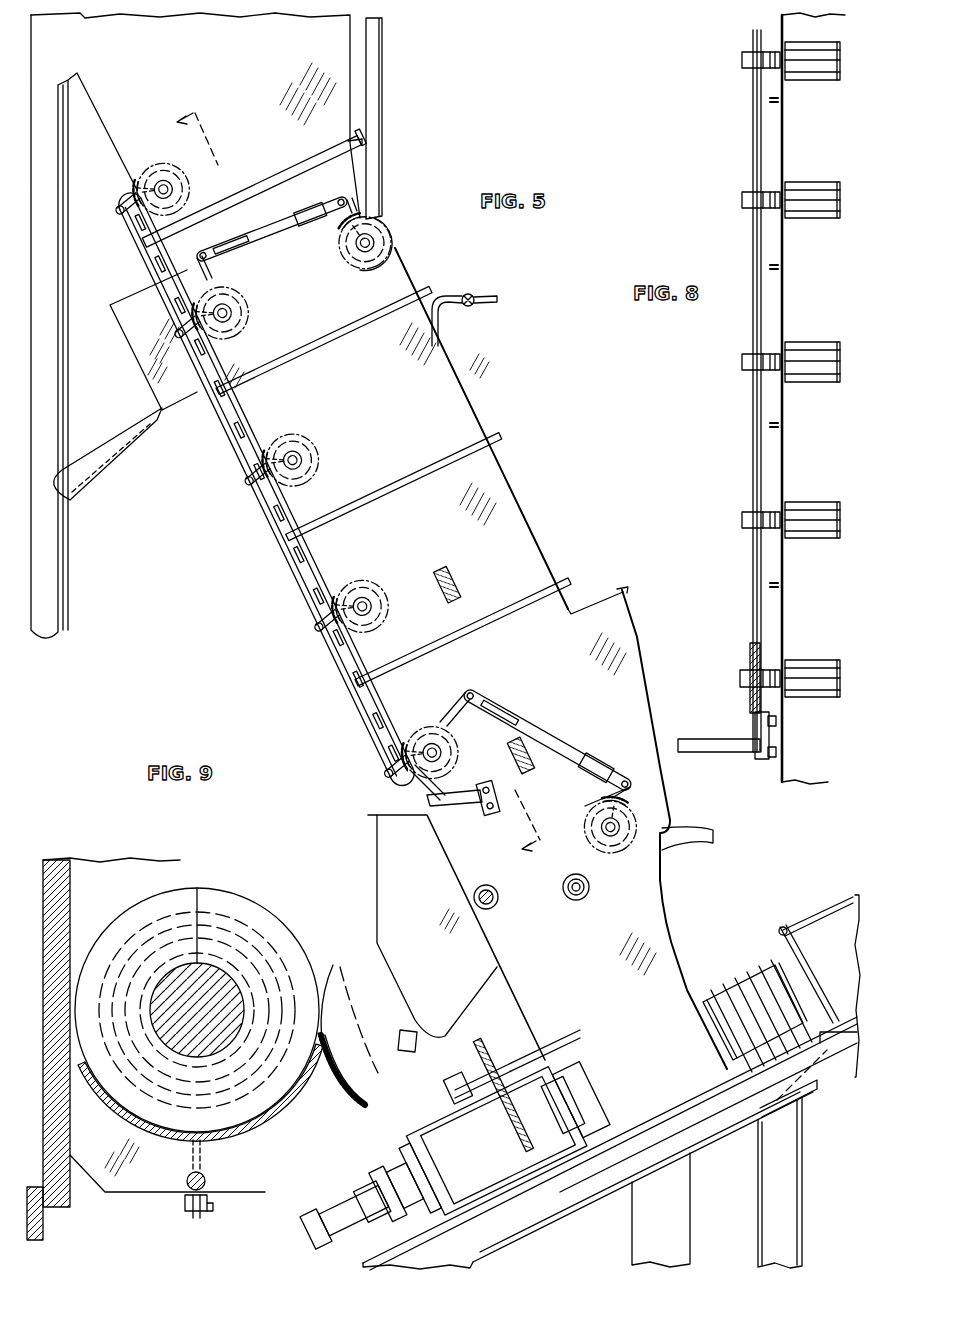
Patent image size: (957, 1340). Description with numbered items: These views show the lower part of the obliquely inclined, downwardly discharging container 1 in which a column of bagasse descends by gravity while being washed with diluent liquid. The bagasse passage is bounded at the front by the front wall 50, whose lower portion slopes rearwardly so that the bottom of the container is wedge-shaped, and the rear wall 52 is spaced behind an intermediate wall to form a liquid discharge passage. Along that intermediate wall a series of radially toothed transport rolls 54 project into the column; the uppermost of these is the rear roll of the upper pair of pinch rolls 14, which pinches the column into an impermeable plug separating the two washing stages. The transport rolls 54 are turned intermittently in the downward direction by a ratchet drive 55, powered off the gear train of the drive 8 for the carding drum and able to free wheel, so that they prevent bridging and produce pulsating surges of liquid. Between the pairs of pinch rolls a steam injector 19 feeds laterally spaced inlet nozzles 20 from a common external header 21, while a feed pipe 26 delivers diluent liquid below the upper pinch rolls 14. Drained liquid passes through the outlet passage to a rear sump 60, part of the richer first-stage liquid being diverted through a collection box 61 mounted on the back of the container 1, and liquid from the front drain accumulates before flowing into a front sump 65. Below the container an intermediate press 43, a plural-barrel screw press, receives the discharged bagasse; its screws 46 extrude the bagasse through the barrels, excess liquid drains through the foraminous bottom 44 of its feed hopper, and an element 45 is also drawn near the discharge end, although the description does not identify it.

In FIG. 5, the container 1 is at (481, 391).
In FIG. 8, the container 1 is at (810, 795).
In FIG. 5, the drive 8 is at (363, 481).
In FIG. 8, the upper pair of pinch rolls 14 is at (808, 182).
In FIG. 5, the injector 19 is at (456, 298).
In FIG. 5, the inlet nozzles 20 is at (446, 338).
In FIG. 5, the external header 21 is at (446, 320).
In FIG. 5, the feed pipe 26 is at (385, 104).
In FIG. 5, the intermediate press 43 is at (701, 988).
In FIG. 9, the foraminous bottom 44 is at (352, 1101).
In FIG. 5, the grate 45 is at (755, 983).
In FIG. 9, the screws 46 is at (278, 920).
In FIG. 5, the front wall 50 is at (523, 507).
In FIG. 5, the rear wall 52 is at (300, 558).
In FIG. 8, the transport rolls 54 is at (822, 80).
In FIG. 5, the ratchet drive 55 is at (262, 535).
In FIG. 8, the ratchet drive 55 is at (743, 426).
In FIG. 5, the rear sump 60 is at (397, 982).
In FIG. 5, the collection box 61 is at (130, 345).
In FIG. 5, the front sump 65 is at (672, 786).